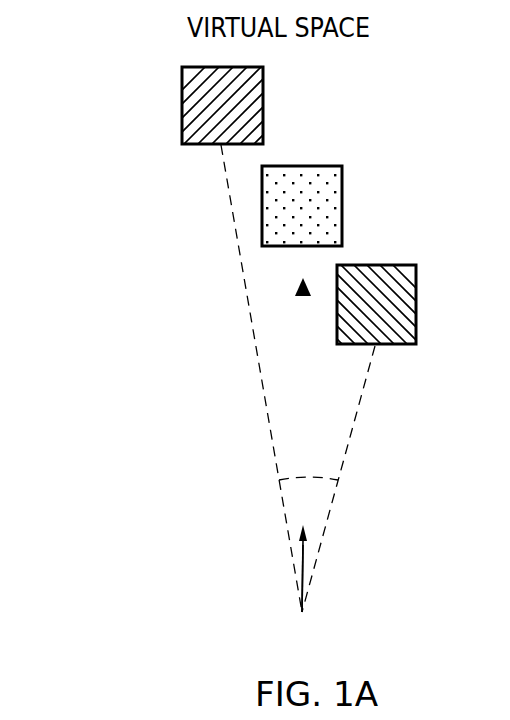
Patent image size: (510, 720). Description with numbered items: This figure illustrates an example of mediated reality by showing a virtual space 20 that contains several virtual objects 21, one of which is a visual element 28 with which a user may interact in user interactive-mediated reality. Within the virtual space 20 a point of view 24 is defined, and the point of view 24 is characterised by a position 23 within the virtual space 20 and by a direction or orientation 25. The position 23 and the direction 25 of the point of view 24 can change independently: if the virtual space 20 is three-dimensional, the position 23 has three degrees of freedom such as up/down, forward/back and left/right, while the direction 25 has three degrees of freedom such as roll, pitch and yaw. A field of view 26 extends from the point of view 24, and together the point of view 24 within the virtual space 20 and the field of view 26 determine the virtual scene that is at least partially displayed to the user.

The virtual space 20 is at (100, 105).
The virtual object 21 is at (263, 108).
The position of the point of view 23 is at (302, 614).
The point of view 24 is at (300, 552).
The direction of the point of view 25 is at (307, 528).
The field of view 26 is at (305, 476).
The visual element 28 is at (302, 296).